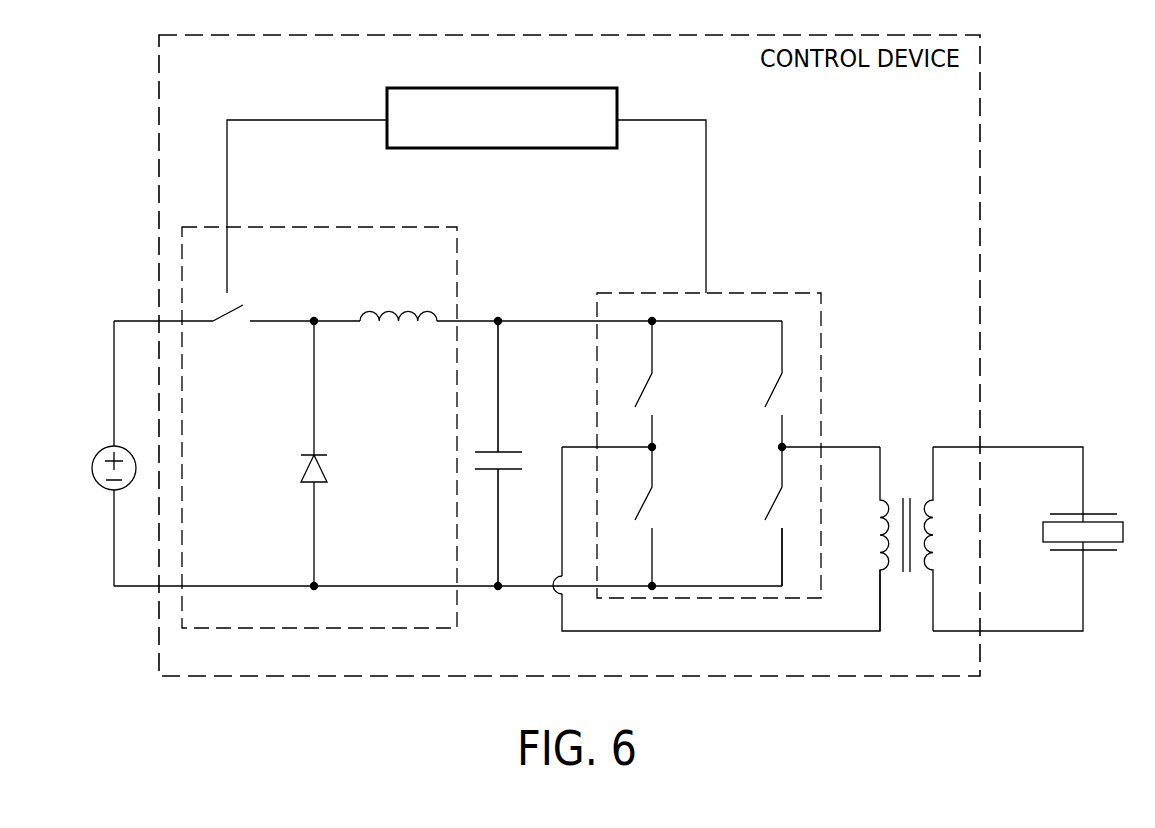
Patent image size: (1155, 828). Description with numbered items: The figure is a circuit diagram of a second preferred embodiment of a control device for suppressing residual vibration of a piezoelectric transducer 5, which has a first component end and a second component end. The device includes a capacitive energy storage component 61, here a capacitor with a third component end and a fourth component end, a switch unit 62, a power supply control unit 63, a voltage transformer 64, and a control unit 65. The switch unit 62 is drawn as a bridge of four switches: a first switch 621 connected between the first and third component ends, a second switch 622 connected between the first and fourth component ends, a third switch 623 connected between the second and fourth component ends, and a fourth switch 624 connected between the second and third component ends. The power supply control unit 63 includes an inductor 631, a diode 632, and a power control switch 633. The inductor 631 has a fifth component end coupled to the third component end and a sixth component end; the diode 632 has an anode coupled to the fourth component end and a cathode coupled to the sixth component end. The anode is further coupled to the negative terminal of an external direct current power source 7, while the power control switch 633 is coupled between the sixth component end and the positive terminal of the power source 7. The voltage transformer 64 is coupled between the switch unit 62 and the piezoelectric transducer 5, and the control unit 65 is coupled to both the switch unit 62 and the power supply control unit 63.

The piezoelectric transducer 5 is at (1105, 514).
The external direct current power source 7 is at (94, 478).
The capacitive energy storage component 61 is at (510, 450).
The switch unit 62 is at (757, 292).
The first switch 621 is at (768, 397).
The second switch 622 is at (768, 510).
The third switch 623 is at (643, 510).
The fourth switch 624 is at (643, 397).
The power supply control unit 63 is at (460, 272).
The inductor 631 is at (400, 330).
The diode 632 is at (310, 484).
The power control switch 633 is at (233, 318).
The voltage transformer 64 is at (904, 433).
The control unit 65 is at (617, 100).